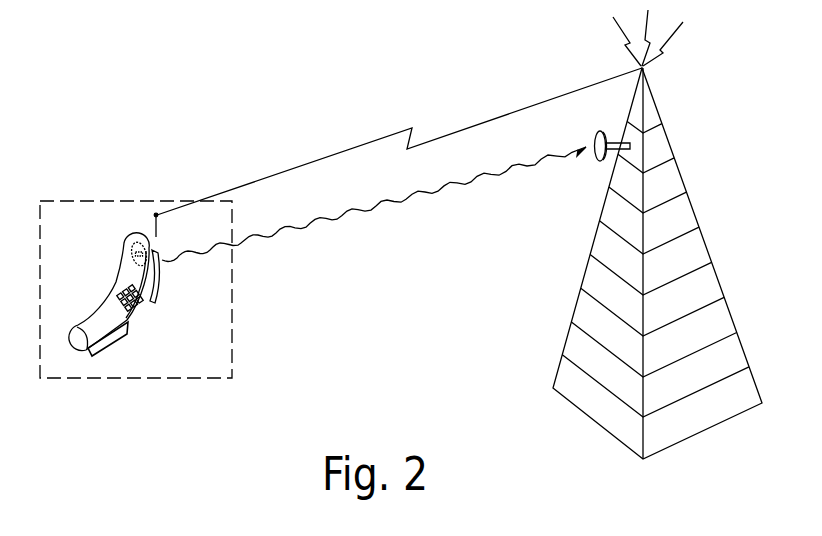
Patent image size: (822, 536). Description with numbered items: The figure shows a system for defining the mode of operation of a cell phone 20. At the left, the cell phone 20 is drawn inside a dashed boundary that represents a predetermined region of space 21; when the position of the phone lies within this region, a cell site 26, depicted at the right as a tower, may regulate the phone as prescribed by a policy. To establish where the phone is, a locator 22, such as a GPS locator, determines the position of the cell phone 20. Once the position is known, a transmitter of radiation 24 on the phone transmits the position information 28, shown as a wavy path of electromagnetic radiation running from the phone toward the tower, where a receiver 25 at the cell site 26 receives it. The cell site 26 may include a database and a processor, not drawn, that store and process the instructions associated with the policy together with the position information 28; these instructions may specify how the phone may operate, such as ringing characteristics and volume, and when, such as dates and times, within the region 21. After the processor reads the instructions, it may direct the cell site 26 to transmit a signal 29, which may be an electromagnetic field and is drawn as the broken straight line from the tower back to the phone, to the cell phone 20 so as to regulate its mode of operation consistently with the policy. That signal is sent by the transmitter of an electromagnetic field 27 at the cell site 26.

The cell phone 20 is at (113, 295).
The predetermined region of space 21 is at (55, 378).
The locator 22 is at (118, 337).
The transmitter of radiation 24 is at (163, 276).
The receiver 25 is at (590, 161).
The cell site 26 is at (583, 415).
The transmitter of an electromagnetic field 27 is at (657, 97).
The position information 28 is at (386, 206).
The signal 29 is at (392, 131).